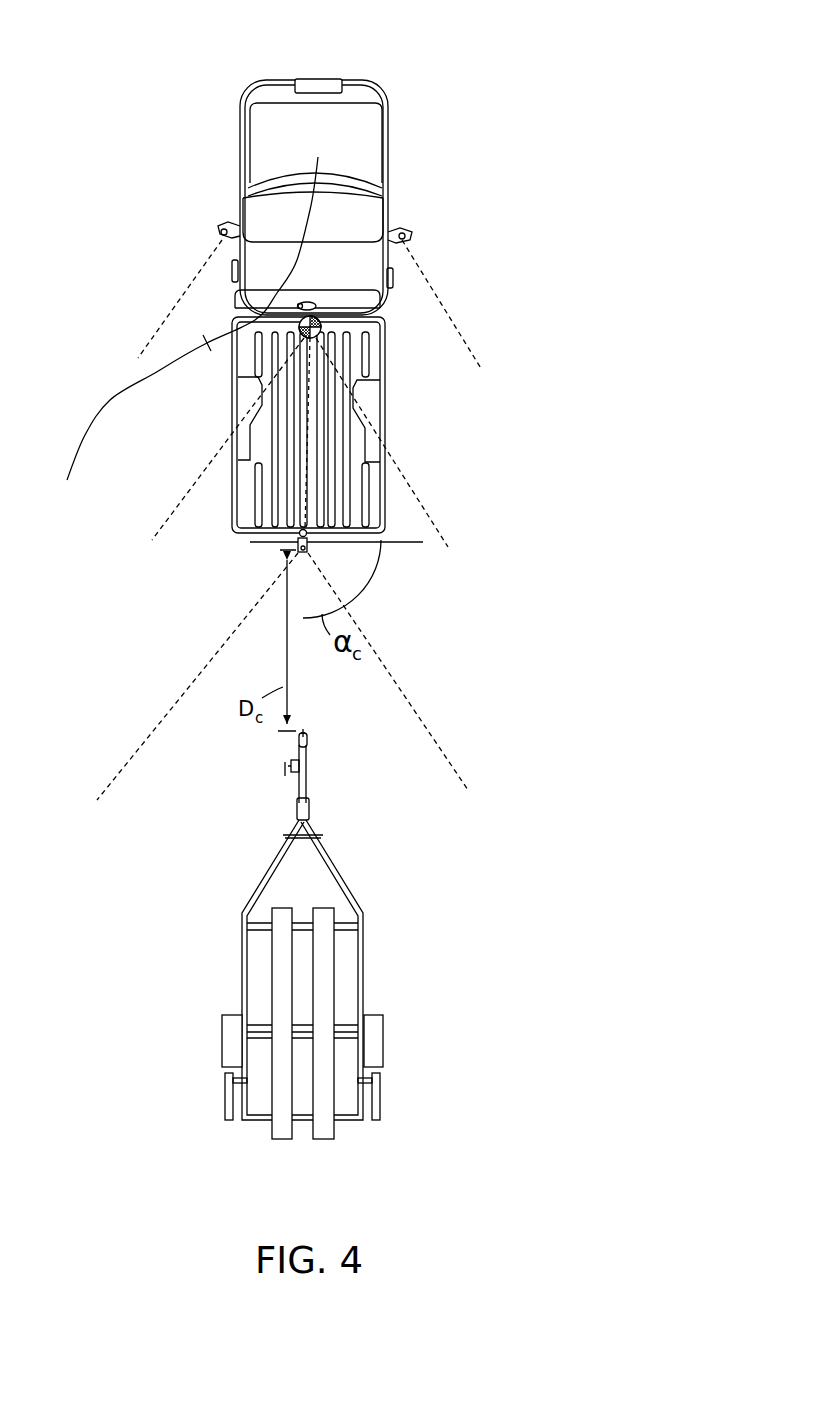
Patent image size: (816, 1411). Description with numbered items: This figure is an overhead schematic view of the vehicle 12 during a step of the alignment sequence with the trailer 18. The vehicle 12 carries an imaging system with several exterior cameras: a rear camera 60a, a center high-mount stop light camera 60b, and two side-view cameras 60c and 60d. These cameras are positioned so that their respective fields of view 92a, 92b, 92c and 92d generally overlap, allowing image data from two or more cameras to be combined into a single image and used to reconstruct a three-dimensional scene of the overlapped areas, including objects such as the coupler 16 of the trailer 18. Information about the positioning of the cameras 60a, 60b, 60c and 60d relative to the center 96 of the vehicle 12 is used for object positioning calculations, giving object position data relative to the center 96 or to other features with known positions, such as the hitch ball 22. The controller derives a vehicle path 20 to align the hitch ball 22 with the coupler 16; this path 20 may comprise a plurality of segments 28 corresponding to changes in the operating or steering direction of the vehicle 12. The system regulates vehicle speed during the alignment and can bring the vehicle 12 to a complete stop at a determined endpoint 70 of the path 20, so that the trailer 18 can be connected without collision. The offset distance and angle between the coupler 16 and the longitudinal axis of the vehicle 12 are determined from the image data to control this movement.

The vehicle 12 is at (393, 49).
The coupler 16 is at (307, 736).
The trailer 18 is at (252, 883).
The vehicle path 20 is at (321, 441).
The hitch ball 22 is at (297, 545).
The segments 28 is at (272, 295).
The rear camera 60a is at (306, 533).
The center high-mount stop light (CHMSL) camera 60b is at (312, 305).
The side-view camera 60c is at (404, 245).
The side-view camera 60d is at (218, 243).
The endpoint 70 is at (243, 524).
The field of view 92a is at (207, 665).
The field of view 92b is at (158, 522).
The field of view 92c is at (462, 330).
The field of view 92d is at (148, 341).
The center 96 is at (322, 330).